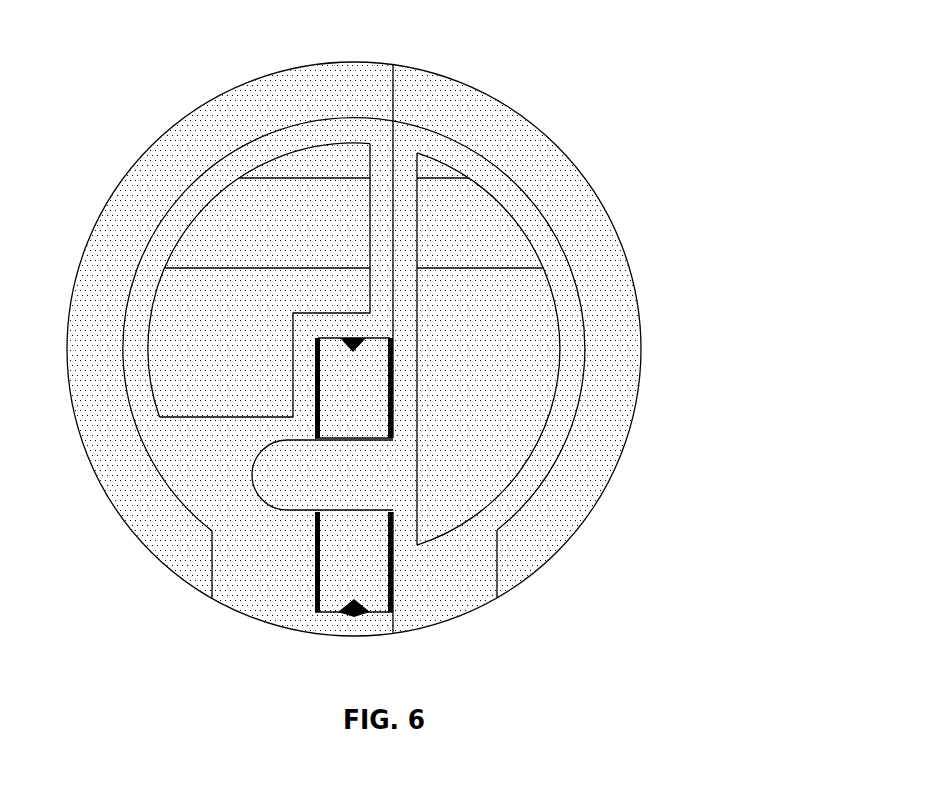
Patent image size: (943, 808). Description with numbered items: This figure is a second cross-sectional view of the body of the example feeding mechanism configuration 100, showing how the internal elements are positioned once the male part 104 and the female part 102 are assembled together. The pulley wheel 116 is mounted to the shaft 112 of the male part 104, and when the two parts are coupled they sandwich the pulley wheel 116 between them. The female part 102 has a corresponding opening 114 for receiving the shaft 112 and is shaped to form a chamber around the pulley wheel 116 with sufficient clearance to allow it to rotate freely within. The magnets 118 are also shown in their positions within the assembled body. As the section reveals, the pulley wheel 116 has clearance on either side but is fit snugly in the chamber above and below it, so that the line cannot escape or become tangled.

The feeding mechanism configuration 100 is at (724, 56).
The female part 102 is at (192, 115).
The male part 104 is at (515, 127).
The magnets 118 is at (257, 230).
The shaft 112 is at (318, 490).
The opening 114 is at (253, 468).
The pulley wheel 116 is at (335, 588).